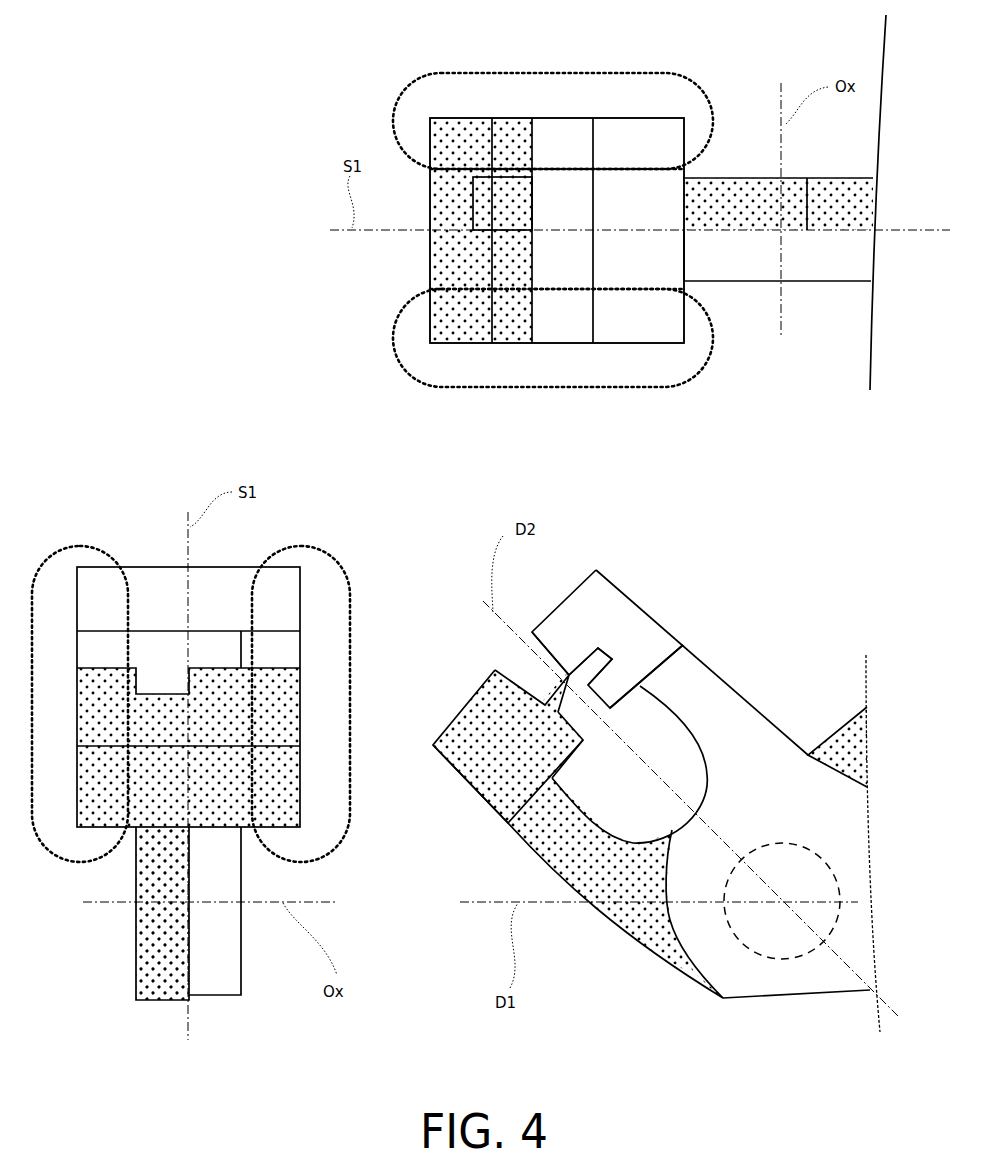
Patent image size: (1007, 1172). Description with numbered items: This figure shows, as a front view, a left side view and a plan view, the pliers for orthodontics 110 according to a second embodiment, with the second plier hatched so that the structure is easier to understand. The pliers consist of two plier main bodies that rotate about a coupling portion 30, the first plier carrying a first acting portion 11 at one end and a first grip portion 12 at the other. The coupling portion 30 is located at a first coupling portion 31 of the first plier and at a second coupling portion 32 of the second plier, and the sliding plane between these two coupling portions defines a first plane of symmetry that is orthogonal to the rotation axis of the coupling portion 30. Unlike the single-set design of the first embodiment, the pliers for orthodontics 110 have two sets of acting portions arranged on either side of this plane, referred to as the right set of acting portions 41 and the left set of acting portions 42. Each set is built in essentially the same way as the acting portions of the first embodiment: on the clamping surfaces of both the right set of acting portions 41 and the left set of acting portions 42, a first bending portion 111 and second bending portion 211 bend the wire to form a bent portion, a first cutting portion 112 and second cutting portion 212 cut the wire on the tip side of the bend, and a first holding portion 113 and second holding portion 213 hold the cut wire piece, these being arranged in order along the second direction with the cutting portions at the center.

The pliers for orthodontics 110 is at (130, 85).
The first acting portion 11 is at (570, 210).
The first grip portion 12 is at (477, 268).
The first bending portion 111 is at (553, 642).
The first cutting portion 112 is at (608, 693).
The first holding portion 113 is at (655, 675).
The second bending portion 211 is at (508, 697).
The second cutting portion 212 is at (547, 702).
The second holding portion 213 is at (567, 737).
The coupling portion 30 is at (788, 843).
The first coupling portion 31 is at (743, 268).
The second coupling portion 32 is at (745, 178).
The right set of acting portions 41 is at (405, 92).
The left set of acting portions 42 is at (405, 304).